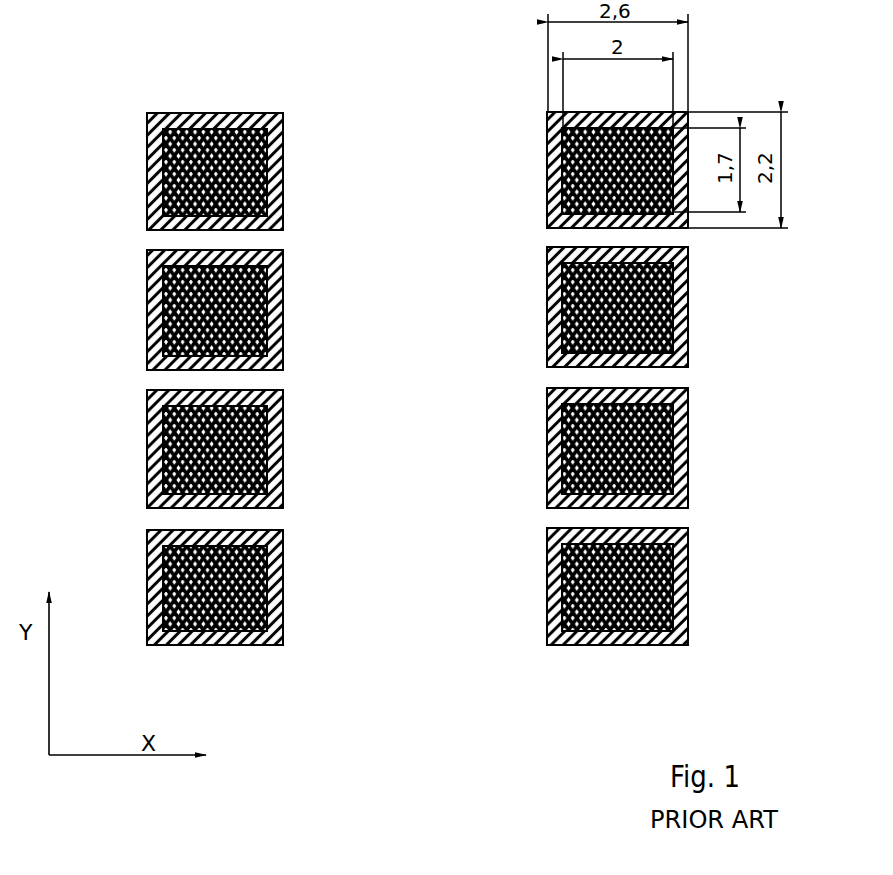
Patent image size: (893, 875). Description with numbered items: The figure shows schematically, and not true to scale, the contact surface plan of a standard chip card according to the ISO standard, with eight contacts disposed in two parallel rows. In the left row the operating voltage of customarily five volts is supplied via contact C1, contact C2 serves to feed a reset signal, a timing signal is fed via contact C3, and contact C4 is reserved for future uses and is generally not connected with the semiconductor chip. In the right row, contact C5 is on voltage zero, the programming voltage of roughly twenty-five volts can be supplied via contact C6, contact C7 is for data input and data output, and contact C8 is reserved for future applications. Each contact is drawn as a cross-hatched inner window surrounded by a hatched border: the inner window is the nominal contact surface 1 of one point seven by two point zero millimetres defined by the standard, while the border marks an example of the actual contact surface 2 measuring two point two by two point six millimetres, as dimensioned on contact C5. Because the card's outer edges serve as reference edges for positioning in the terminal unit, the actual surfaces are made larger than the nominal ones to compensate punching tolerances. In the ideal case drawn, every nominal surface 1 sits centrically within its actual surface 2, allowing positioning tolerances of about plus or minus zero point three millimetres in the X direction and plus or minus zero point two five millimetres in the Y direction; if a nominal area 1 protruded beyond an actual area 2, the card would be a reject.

The nominal contact surface 1 is at (211, 113).
The actual contact surface 2 is at (239, 122).
The contact C1 is at (247, 125).
The contact C2 is at (247, 310).
The contact C3 is at (247, 449).
The contact C4 is at (247, 587).
The contact C5 is at (576, 170).
The contact C6 is at (576, 307).
The contact C7 is at (576, 448).
The contact C8 is at (576, 586).